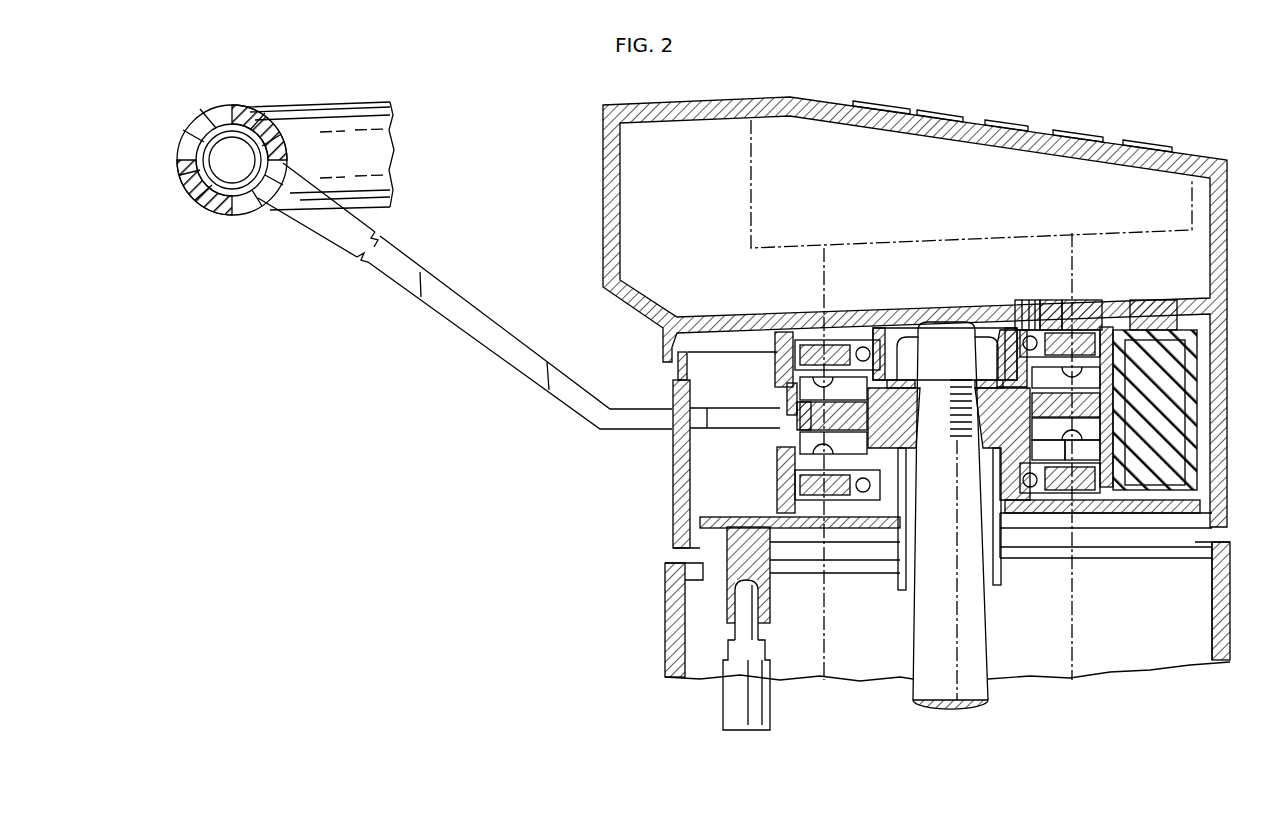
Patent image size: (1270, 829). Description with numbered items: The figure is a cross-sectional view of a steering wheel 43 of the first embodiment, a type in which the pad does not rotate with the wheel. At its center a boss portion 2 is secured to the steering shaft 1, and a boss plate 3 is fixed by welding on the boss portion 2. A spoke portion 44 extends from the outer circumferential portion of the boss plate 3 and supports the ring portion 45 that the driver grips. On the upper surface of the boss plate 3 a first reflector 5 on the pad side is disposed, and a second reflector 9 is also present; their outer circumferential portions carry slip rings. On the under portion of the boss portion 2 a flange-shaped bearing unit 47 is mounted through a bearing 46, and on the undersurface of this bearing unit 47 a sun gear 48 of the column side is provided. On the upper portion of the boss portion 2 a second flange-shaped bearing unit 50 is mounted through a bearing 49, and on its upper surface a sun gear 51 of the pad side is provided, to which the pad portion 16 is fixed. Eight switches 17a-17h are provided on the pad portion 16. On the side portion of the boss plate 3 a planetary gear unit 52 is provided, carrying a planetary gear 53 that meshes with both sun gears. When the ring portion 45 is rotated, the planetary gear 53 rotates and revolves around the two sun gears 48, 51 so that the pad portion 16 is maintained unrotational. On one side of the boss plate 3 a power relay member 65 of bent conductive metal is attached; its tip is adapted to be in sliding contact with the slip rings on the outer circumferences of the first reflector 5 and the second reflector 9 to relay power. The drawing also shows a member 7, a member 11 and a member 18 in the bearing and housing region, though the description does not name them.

The steering shaft 1 is at (989, 610).
The boss portion 2 is at (995, 428).
The boss plate 3 is at (778, 428).
The first reflector 5 is at (777, 366).
The spacer 7 is at (1108, 310).
The second reflector 9 is at (780, 446).
The inner ring 11 is at (1048, 449).
The pad portion 16 is at (1197, 166).
The switches 17a-17h is at (893, 110).
The lower housing wall 18 is at (1225, 592).
The steering wheel 43 is at (882, 369).
The spoke portion 44 is at (622, 410).
The ring portion 45 is at (345, 106).
The bearing 46 is at (1036, 540).
The bearing unit 47 is at (1065, 540).
The sun gear 48 is at (1112, 540).
The bearing 49 is at (1032, 310).
The bearing unit 50 is at (1090, 310).
The sun gear 51 is at (1060, 310).
The planetary gear unit 52 is at (1180, 310).
The planetary gear 53 is at (1152, 310).
The power relay member 65 is at (786, 398).